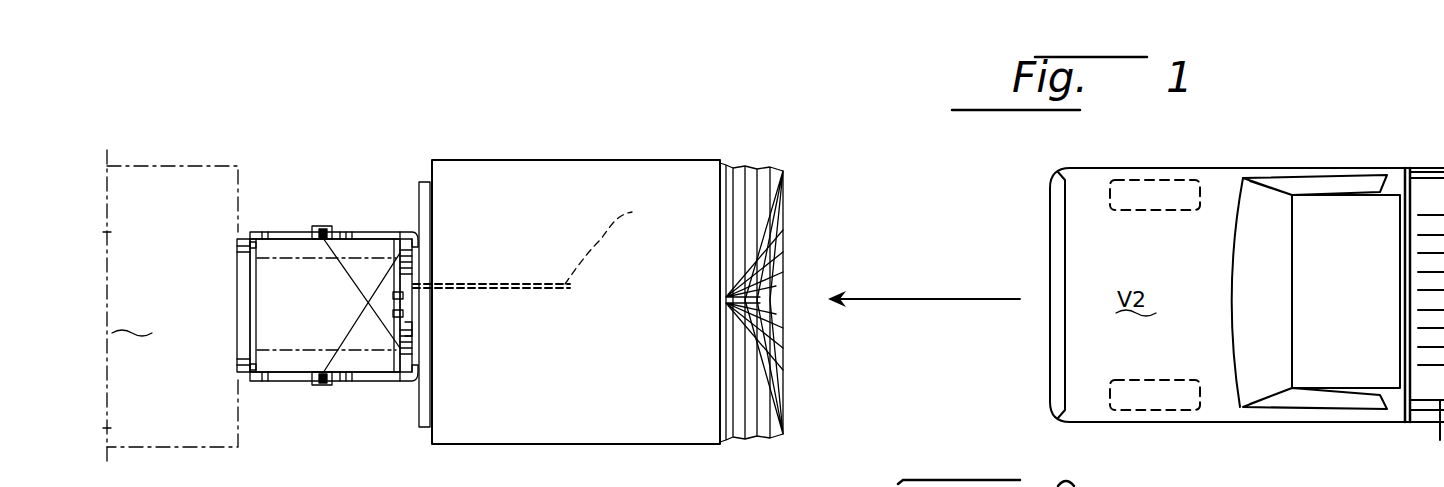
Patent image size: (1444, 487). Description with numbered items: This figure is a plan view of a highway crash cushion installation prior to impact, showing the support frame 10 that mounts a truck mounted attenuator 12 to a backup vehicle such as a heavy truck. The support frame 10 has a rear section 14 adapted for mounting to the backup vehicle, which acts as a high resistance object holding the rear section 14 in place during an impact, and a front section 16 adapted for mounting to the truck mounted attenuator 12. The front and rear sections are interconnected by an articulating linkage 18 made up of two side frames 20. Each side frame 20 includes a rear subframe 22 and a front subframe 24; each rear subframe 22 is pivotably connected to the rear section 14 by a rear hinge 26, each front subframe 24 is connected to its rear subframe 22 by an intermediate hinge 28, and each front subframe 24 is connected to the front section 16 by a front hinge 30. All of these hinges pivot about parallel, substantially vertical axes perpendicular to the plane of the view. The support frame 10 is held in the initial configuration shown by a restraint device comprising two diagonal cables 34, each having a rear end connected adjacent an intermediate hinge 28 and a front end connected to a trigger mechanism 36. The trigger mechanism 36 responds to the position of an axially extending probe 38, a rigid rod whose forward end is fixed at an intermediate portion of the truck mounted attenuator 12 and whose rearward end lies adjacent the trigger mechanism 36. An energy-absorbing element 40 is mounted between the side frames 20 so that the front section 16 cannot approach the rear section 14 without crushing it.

The support frame 10 is at (262, 430).
The truck mounted attenuator 12 is at (646, 365).
The rear section 14 is at (237, 300).
The front section 16 is at (430, 273).
The articulating linkage 18 is at (305, 176).
The side frames 20 is at (367, 164).
The rear subframe 22 is at (263, 235).
The front subframe 24 is at (378, 233).
The rear hinge 26 is at (238, 243).
The intermediate hinge 28 is at (323, 239).
The front hinge 30 is at (420, 233).
The diagonal cables 34 is at (403, 295).
The trigger mechanism 36 is at (420, 330).
The probe 38 is at (552, 241).
The energy-absorbing element 40 is at (272, 330).